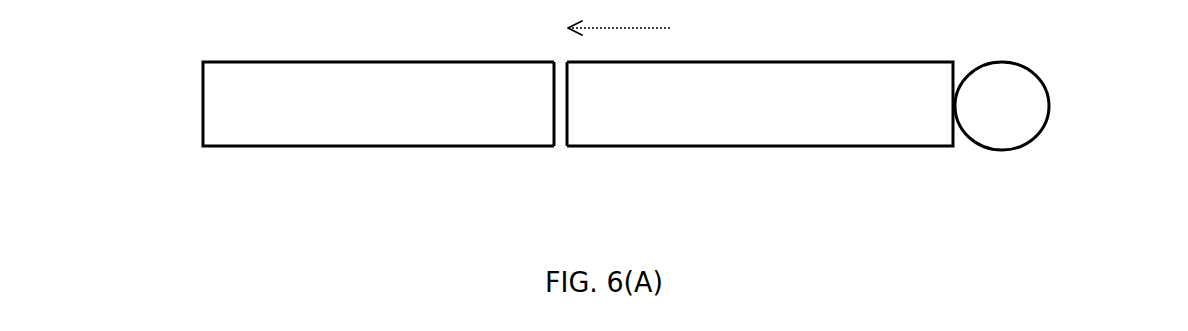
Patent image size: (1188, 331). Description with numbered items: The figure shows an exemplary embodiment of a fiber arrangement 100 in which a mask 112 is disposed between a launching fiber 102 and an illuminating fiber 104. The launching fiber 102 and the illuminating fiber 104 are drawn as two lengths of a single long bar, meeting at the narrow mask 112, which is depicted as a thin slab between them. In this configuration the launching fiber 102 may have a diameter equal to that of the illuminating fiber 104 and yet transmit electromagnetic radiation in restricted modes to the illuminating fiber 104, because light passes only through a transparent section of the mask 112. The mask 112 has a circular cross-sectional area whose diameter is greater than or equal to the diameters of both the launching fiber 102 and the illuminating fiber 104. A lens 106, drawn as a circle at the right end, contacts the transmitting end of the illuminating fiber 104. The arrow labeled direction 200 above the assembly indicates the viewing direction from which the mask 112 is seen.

The device assembly 100 is at (672, 115).
The launching fiber 102 is at (432, 140).
The illuminating fiber 104 is at (772, 131).
The lens 106 is at (1008, 145).
The mask 112 is at (561, 146).
The direction 200 is at (655, 29).